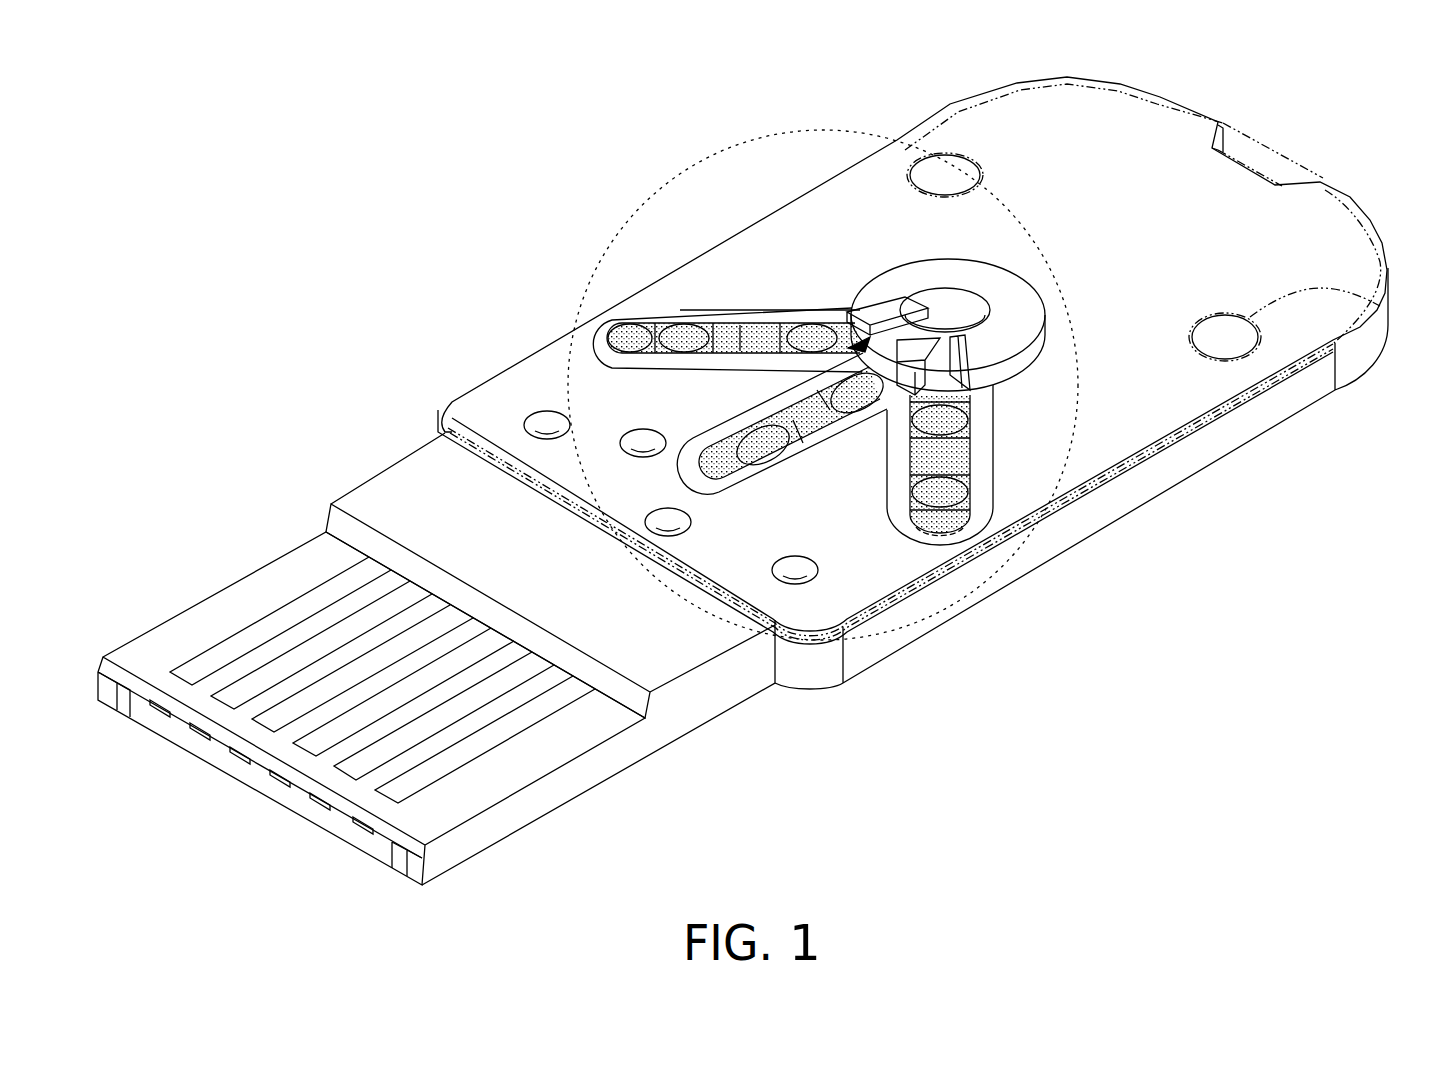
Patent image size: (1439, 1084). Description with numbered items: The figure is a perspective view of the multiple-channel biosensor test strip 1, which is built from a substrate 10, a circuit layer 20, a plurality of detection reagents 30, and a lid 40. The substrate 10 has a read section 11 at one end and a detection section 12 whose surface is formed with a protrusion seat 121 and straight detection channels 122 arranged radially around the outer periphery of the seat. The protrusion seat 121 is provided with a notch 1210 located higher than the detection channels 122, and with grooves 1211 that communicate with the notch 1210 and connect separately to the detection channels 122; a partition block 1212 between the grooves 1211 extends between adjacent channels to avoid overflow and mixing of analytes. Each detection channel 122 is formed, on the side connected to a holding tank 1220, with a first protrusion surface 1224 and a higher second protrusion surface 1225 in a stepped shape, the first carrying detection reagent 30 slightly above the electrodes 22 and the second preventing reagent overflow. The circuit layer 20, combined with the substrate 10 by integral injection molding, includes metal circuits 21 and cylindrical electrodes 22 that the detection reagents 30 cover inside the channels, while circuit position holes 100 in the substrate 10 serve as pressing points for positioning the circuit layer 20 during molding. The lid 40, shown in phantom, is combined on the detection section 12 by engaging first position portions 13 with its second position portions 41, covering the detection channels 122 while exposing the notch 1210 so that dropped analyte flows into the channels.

The multiple-channel biosensor test strip 1 is at (751, 68).
The substrate 10 is at (1062, 561).
The circuit position holes 100 is at (812, 574).
The read section 11 is at (613, 757).
The detection section 12 is at (1122, 497).
The first position portions 13 is at (1243, 354).
The circuit layer 20 is at (306, 396).
The metal circuits 21 is at (315, 598).
The electrodes 22 is at (605, 303).
The detection reagents 30 is at (950, 450).
The lid 40 is at (1267, 153).
The second position portions 41 is at (1380, 305).
The protrusion seat 121 is at (945, 270).
The detection channels 122 is at (790, 414).
The notch 1210 is at (937, 317).
The grooves 1211 is at (828, 350).
The partition block 1212 is at (845, 330).
The holding tank 1220 is at (975, 322).
The first protrusion surface 1224 is at (968, 372).
The second protrusion surface 1225 is at (955, 378).